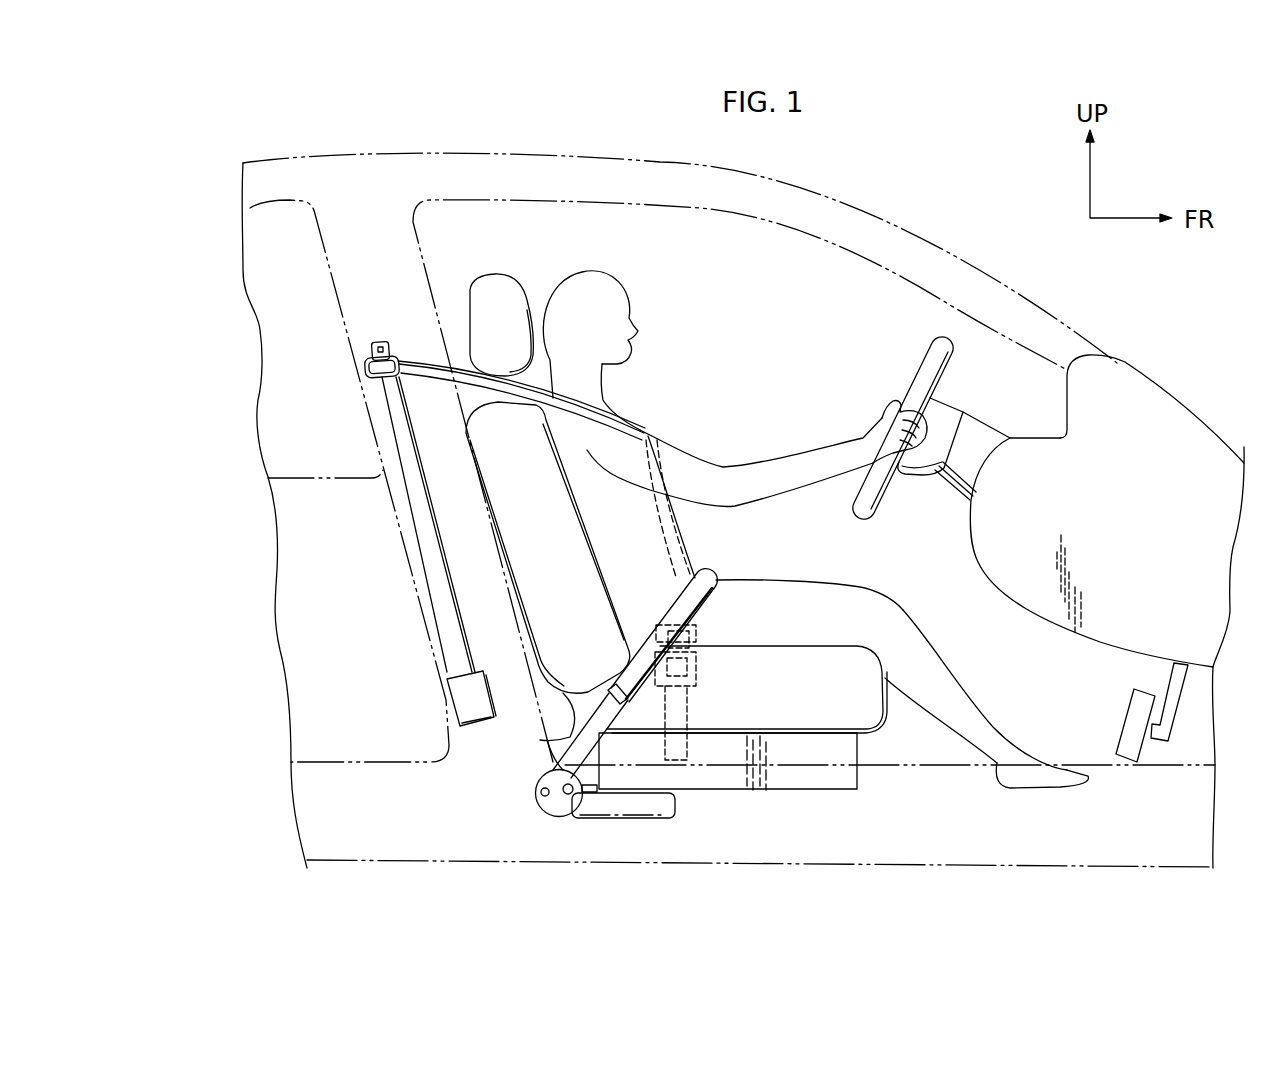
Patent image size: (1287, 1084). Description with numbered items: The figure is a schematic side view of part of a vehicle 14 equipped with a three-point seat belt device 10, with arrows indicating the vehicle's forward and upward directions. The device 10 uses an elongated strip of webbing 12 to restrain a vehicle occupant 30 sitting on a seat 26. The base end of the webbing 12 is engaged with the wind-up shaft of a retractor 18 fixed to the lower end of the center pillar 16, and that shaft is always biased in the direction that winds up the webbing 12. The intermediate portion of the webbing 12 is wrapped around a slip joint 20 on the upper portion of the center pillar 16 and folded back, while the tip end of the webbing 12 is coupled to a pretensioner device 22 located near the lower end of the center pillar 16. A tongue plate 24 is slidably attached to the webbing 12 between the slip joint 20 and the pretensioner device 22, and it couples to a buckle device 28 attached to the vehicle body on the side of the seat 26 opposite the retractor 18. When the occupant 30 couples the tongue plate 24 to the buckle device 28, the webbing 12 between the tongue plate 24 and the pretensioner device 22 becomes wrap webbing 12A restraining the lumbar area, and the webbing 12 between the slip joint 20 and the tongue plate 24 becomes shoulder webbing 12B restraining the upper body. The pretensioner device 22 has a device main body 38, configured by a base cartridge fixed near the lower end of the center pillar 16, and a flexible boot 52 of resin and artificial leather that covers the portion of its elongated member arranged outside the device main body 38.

The seat belt device 10 is at (748, 402).
The webbing 12 is at (427, 550).
The wrap webbing 12A is at (656, 641).
The shoulder webbing 12B is at (647, 430).
The vehicle 14 is at (916, 232).
The center pillar 16 is at (417, 243).
The retractor 18 is at (476, 728).
The slip joint 20 is at (360, 370).
The pretensioner device 22 is at (578, 832).
The tongue plate 24 is at (700, 632).
The seat 26 is at (880, 660).
The buckle device 28 is at (699, 667).
The vehicle occupant 30 is at (632, 290).
The device main body 38 is at (640, 820).
The boot 52 is at (571, 743).